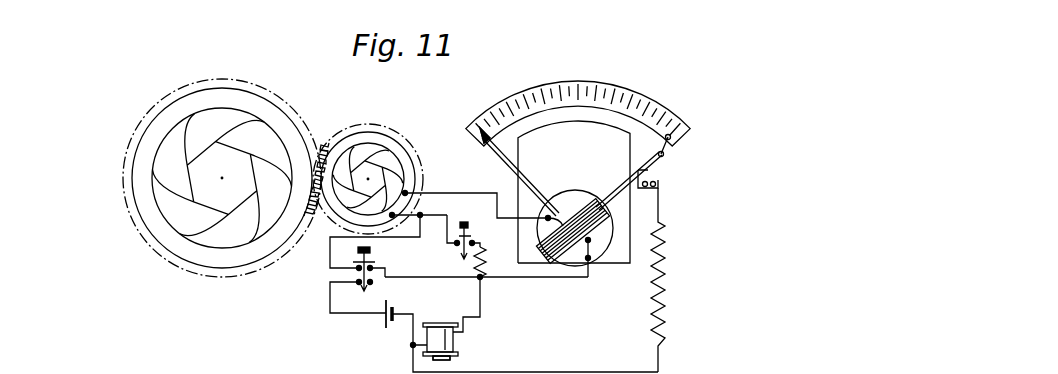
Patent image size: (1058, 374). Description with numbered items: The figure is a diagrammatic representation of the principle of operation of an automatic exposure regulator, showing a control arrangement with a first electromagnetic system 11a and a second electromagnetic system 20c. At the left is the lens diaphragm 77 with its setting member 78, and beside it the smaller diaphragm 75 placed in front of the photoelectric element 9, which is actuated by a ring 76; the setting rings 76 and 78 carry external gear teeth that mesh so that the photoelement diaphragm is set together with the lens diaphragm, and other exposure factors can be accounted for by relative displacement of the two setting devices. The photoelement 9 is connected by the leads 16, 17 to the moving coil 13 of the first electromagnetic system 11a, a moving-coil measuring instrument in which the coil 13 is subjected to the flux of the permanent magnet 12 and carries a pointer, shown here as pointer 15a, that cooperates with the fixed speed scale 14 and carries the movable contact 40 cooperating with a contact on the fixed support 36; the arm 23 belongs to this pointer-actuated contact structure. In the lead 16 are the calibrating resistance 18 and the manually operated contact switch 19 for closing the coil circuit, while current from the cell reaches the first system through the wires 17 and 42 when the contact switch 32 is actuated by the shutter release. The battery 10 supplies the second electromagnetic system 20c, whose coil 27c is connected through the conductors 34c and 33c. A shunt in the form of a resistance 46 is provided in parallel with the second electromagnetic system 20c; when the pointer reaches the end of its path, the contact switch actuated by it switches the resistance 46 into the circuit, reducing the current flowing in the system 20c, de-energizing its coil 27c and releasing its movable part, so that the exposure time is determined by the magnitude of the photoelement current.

The lens diaphragm 77 is at (217, 118).
The setting member 78 is at (318, 158).
The ring 76 is at (327, 148).
The diaphragm 75 is at (350, 155).
The photoelectric element 9 is at (368, 159).
The lead 16 is at (415, 208).
The lead 17 is at (470, 191).
The wire 42 is at (402, 238).
The contact switch 19 is at (472, 237).
The calibrating resistance 18 is at (485, 256).
The contact switch 32 is at (358, 250).
The battery 10 is at (385, 325).
The battery lead 34c is at (407, 318).
The second electromagnetic system 20c is at (470, 337).
The coil 27c is at (452, 344).
The lead wire 33c is at (486, 302).
The speed scale 14 is at (577, 93).
The permanent magnet 12 is at (602, 137).
The moving coil 13 is at (597, 225).
The pointer needle 15a is at (519, 172).
The movable contact 40 is at (495, 140).
The contact arm 23 is at (666, 157).
The fixed support 36 is at (655, 171).
The first electromagnetic system 11a is at (644, 211).
The resistance 46 is at (667, 290).